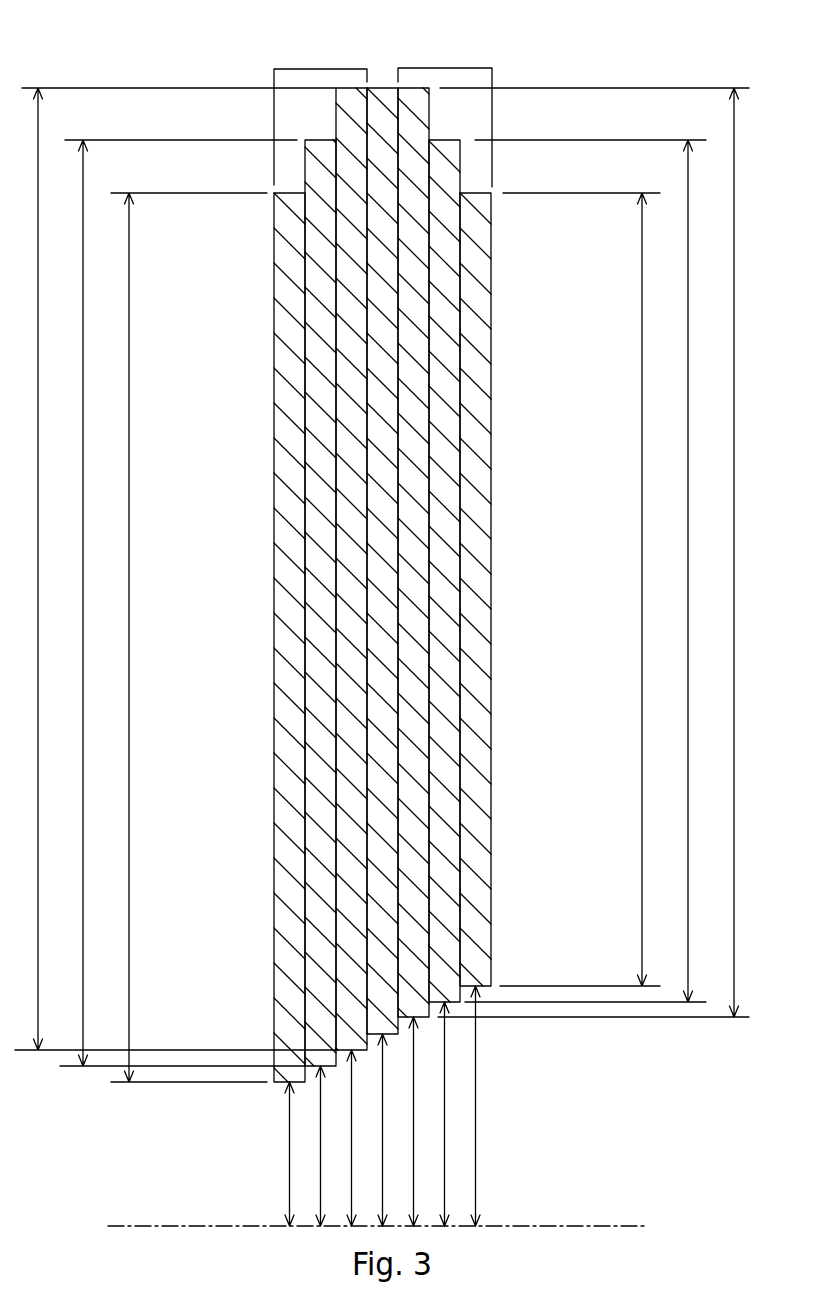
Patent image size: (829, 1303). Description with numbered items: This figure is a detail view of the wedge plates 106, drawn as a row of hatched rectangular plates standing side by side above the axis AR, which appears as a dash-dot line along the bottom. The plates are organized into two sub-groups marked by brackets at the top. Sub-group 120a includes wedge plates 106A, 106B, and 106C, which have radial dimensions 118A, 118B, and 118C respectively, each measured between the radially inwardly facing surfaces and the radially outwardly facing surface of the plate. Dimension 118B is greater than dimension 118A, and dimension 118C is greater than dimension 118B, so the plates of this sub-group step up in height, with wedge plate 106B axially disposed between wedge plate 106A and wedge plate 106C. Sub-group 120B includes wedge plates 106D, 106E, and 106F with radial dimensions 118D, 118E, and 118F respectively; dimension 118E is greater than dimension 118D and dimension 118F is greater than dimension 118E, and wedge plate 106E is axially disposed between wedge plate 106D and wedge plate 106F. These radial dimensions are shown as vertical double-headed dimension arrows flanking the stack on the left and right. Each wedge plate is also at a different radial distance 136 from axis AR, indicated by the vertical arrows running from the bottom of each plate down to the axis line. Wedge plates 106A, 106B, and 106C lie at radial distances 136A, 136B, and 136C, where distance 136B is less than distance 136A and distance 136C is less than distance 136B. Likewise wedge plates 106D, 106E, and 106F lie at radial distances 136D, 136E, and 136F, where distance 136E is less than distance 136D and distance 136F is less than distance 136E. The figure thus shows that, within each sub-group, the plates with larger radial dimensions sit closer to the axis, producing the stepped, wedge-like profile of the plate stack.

The wedge plates 106 is at (692, 66).
The wedge plate 106A is at (470, 953).
The wedge plate 106B is at (440, 912).
The wedge plate 106C is at (411, 871).
The wedge plate 106D is at (290, 932).
The wedge plate 106E is at (322, 965).
The wedge plate 106F is at (350, 1007).
The radial dimension 118A is at (641, 511).
The radial dimension 118B is at (688, 555).
The radial dimension 118C is at (733, 597).
The radial dimension 118D is at (129, 622).
The radial dimension 118E is at (83, 577).
The radial dimension 118F is at (38, 533).
The sub-group of wedge plates 120B is at (320, 68).
The sub-group of wedge plates 120a is at (441, 67).
The radial distance 136 is at (382, 1178).
The radial distance 136A is at (476, 1160).
The radial distance 136B is at (444, 1133).
The radial distance 136C is at (413, 1112).
The radial distance 136D is at (352, 1160).
The radial distance 136E is at (320, 1133).
The radial distance 136F is at (289, 1113).
The axis AR is at (623, 1226).